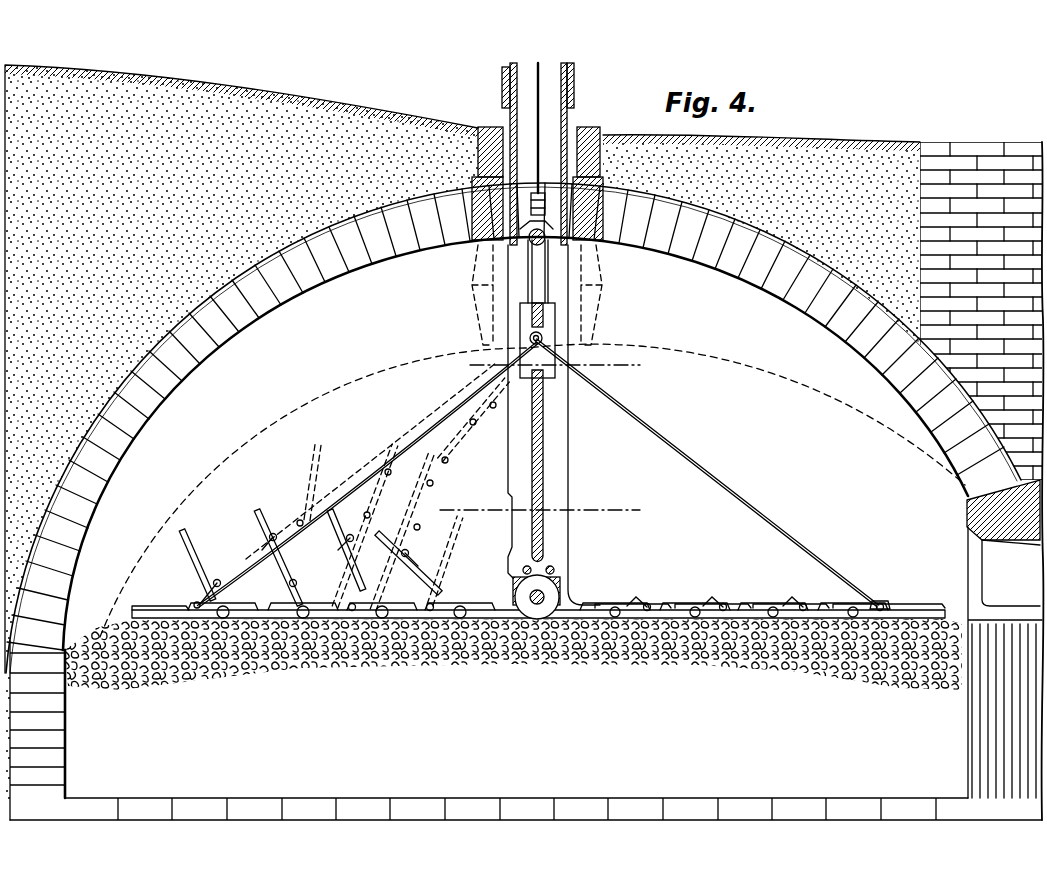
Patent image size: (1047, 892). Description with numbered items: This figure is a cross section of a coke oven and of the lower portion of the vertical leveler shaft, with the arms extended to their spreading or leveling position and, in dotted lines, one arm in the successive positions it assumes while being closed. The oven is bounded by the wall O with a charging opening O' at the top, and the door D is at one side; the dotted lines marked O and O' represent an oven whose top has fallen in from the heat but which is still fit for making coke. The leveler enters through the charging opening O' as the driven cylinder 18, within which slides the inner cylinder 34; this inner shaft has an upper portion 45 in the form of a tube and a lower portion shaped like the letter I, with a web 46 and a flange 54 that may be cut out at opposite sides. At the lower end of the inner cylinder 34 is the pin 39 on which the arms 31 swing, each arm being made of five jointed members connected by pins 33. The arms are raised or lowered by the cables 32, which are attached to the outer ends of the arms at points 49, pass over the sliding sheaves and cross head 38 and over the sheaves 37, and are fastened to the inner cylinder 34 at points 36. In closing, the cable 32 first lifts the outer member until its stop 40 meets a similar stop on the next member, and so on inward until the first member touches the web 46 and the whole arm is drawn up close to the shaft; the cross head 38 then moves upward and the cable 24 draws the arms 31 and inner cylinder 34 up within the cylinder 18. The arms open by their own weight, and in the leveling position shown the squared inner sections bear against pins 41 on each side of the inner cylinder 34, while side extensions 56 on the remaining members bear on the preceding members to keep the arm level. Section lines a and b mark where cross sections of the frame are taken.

The cylinder 18 is at (574, 77).
The cable 24 is at (536, 64).
The upper tubular portion 45 is at (517, 93).
The side extension 56 is at (541, 190).
The attachment point 36 is at (548, 215).
The sheave 37 is at (522, 232).
The cross head and sliding sheaves 38 is at (545, 343).
The arm 31 is at (322, 458).
The cable 32 is at (243, 567).
The pin 33 is at (272, 530).
The inner cylinder 34 is at (569, 498).
The pin 39 is at (535, 604).
The stop 40 is at (246, 604).
The pin 41 is at (526, 566).
The web 46 is at (545, 446).
The attachment point 49 is at (303, 518).
The flange 54 is at (562, 472).
The oven wall O is at (513, 490).
The charging opening O' is at (532, 362).
The section line a— a is at (540, 510).
The section line b— b is at (545, 365).
The door D is at (981, 481).